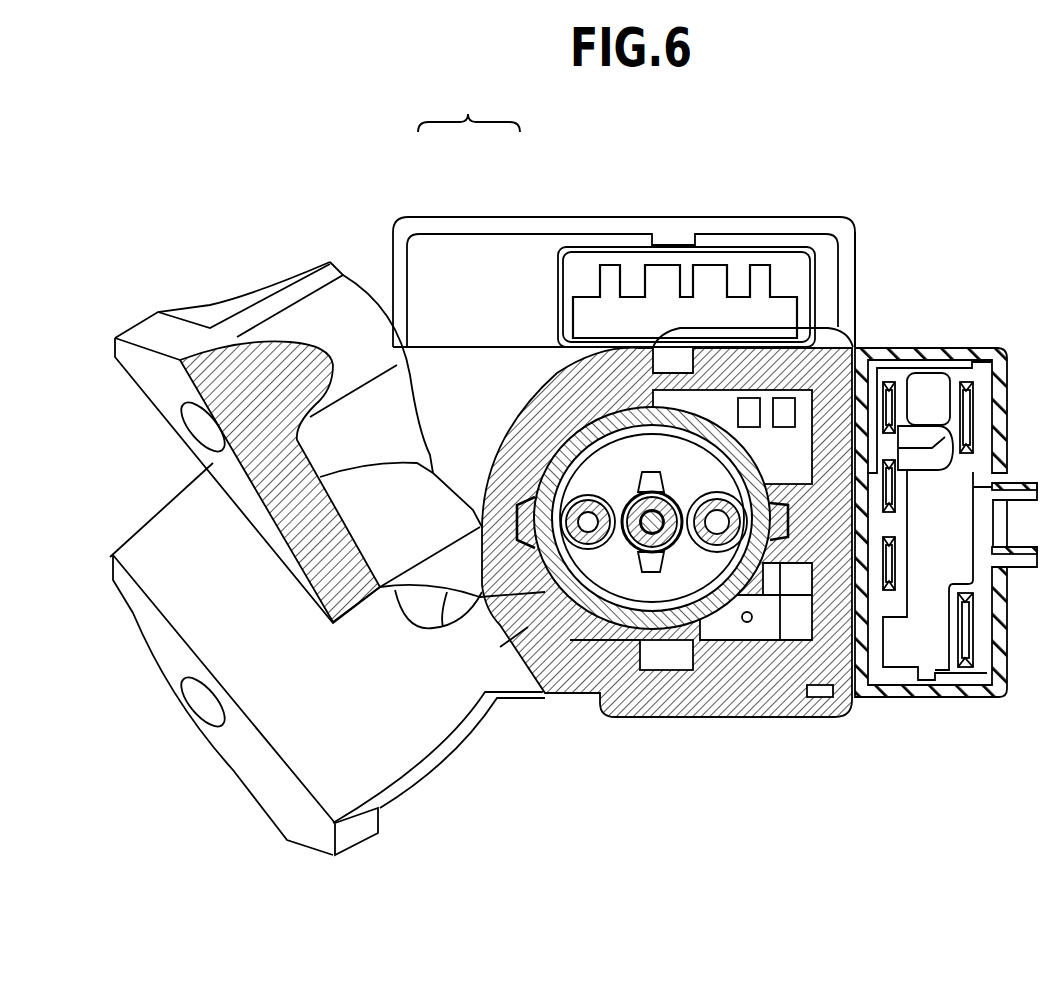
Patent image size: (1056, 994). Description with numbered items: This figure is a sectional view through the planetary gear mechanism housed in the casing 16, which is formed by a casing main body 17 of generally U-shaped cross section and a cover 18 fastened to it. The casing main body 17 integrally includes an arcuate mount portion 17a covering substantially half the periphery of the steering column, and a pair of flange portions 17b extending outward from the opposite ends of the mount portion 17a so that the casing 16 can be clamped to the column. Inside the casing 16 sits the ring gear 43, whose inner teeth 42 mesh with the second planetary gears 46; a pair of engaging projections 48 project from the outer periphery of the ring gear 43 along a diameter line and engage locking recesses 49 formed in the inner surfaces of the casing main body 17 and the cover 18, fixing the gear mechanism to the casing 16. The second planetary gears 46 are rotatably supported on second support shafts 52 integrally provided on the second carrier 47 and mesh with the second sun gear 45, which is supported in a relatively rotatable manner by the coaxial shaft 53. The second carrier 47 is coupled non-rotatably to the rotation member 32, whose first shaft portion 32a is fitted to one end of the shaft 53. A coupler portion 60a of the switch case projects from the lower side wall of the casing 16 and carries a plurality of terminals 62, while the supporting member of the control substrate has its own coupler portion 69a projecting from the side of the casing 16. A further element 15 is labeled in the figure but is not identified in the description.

The sensor 15 is at (857, 294).
The casing 16 is at (469, 106).
The casing main body 17 is at (430, 357).
The cover 18 is at (502, 250).
The coupler portion 69a is at (742, 267).
The mount portion 17a is at (455, 692).
The flange portions 17b is at (157, 367).
The terminals 62 is at (966, 381).
The ring gear 43 is at (587, 433).
The inner teeth 42 is at (592, 487).
The second support shafts 52 is at (560, 492).
The second sun gear 45 is at (630, 492).
The shaft 53 is at (665, 505).
The engaging projections 48 is at (517, 517).
The locking recesses 49 is at (480, 523).
The second planetary gears 46 is at (487, 597).
The first shaft portion 32a is at (452, 717).
The second carrier 47 is at (643, 597).
The rotation member 32 is at (682, 552).
The coupler portion 60a is at (950, 697).